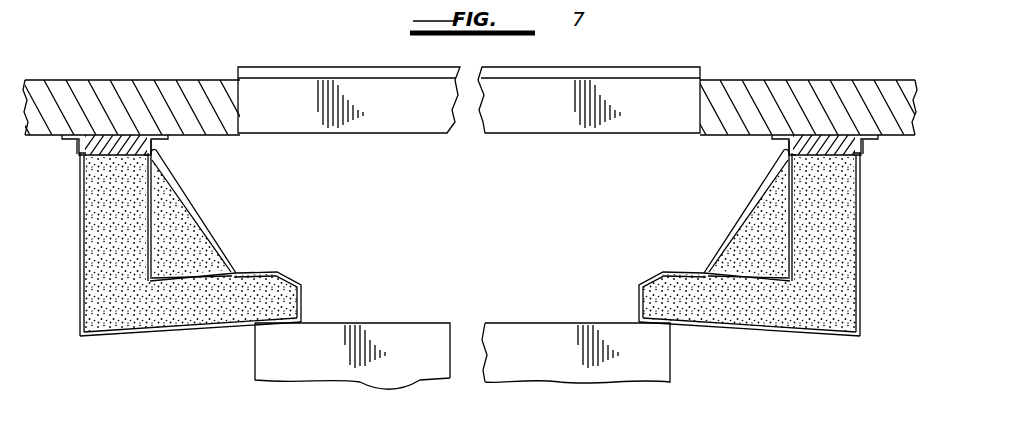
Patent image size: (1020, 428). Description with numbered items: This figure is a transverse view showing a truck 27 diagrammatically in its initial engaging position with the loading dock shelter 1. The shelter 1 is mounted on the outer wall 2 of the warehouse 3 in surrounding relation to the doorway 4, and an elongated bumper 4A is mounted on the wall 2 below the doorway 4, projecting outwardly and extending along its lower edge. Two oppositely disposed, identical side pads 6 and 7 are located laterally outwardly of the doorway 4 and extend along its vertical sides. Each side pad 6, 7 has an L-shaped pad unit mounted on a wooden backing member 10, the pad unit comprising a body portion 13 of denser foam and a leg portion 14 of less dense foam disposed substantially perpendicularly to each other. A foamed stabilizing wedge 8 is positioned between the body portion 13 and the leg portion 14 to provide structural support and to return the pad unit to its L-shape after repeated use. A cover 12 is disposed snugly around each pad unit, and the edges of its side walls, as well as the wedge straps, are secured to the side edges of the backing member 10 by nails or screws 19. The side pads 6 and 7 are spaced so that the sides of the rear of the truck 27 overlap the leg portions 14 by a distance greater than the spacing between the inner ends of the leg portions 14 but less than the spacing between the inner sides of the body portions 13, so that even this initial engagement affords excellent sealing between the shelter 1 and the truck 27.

The loading dock shelter 1 is at (147, 333).
The outer wall 2 is at (129, 68).
The warehouse 3 is at (78, 84).
The doorway 4 is at (240, 118).
The elongated bumper 4A is at (433, 116).
The side pad 6 is at (88, 227).
The side pad 7 is at (854, 218).
The stabilizing wedge 8 is at (192, 227).
The backing member 10 is at (128, 142).
The cover 12 is at (168, 330).
The body portion 13 is at (100, 200).
The leg portion 14 is at (205, 313).
The nails or screws 19 is at (80, 146).
The truck 27 is at (306, 369).